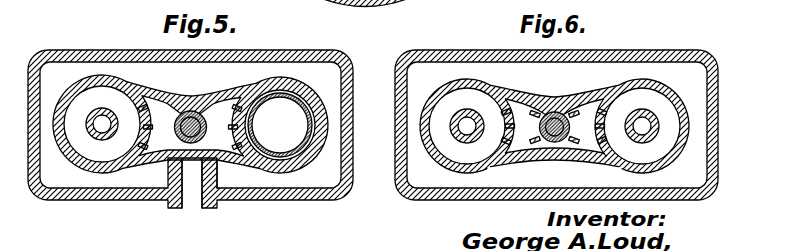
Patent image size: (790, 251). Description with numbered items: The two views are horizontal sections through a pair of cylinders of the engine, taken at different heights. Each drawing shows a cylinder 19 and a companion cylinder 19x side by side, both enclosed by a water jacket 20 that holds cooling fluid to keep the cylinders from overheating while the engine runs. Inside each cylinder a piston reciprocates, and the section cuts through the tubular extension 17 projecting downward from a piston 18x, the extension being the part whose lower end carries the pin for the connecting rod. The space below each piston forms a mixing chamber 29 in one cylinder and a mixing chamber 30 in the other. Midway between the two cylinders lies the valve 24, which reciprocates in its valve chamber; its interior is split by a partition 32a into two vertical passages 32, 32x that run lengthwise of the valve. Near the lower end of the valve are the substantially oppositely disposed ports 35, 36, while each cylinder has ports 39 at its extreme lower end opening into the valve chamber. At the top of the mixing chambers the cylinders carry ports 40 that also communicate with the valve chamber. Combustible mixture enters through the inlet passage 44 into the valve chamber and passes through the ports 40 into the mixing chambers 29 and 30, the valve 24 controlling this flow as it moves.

In FIG. 5, the tubular extension 17 is at (91, 134).
In FIG. 6, the tubular extension 17 is at (457, 107).
In FIG. 5, the piston 18x is at (252, 130).
In FIG. 5, the cylinder 19 is at (62, 141).
In FIG. 6, the cylinder 19 is at (437, 103).
In FIG. 5, the cylinder 19x is at (314, 105).
In FIG. 6, the cylinder 19x is at (667, 93).
In FIG. 5, the water jacket 20 is at (332, 153).
In FIG. 5, the valve 24 is at (158, 155).
In FIG. 6, the valve 24 is at (556, 141).
In FIG. 5, the mixing chamber 29 is at (96, 100).
In FIG. 6, the mixing chamber 29 is at (452, 152).
In FIG. 5, the mixing chamber 30 is at (283, 78).
In FIG. 6, the mixing chamber 30 is at (672, 134).
In FIG. 5, the passage 32 is at (164, 153).
In FIG. 6, the passage 32 is at (545, 132).
In FIG. 5, the partition 32a is at (192, 104).
In FIG. 6, the partition 32a is at (561, 99).
In FIG. 5, the passage 32x is at (215, 161).
In FIG. 6, the passage 32x is at (586, 98).
In FIG. 6, the port 35 is at (505, 153).
In FIG. 6, the port 36 is at (556, 159).
In FIG. 6, the ports 39 is at (524, 118).
In FIG. 5, the ports 40 is at (154, 114).
In FIG. 5, the inlet passage 44 is at (193, 201).